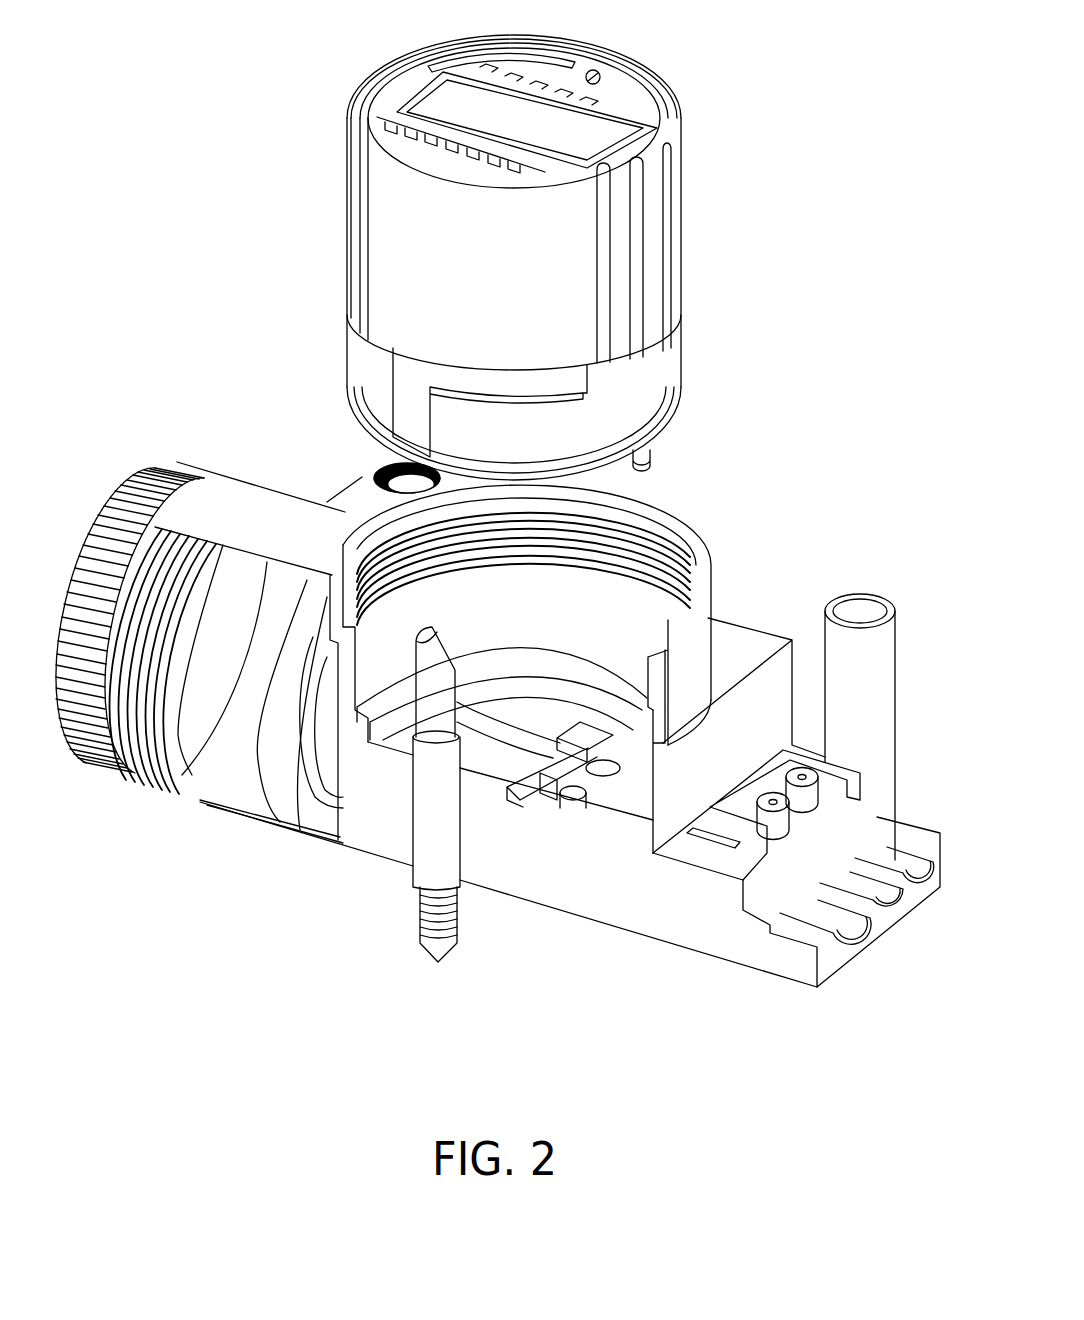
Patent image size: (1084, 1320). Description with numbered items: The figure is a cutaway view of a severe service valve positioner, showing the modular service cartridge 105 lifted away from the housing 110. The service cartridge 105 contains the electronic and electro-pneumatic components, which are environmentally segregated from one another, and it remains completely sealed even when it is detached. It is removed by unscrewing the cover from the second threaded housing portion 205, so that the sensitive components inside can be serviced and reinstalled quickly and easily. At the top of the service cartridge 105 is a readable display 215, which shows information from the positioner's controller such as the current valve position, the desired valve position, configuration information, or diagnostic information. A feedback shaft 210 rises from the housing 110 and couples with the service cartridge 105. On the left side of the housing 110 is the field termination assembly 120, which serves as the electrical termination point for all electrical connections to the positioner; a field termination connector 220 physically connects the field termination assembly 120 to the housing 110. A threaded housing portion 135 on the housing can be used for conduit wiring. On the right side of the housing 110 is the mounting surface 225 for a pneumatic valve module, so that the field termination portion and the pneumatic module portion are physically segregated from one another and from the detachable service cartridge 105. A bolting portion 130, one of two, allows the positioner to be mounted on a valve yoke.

The service cartridge 105 is at (653, 177).
The readable display 215 is at (443, 100).
The threaded housing portion 135 is at (375, 466).
The field termination assembly 120 is at (218, 497).
The second threaded housing portion 205 is at (677, 545).
The housing 110 is at (750, 648).
The bolting portion 130 is at (882, 605).
The mounting surface 225 is at (897, 865).
The feedback shaft 210 is at (432, 870).
The field termination connector 220 is at (560, 812).